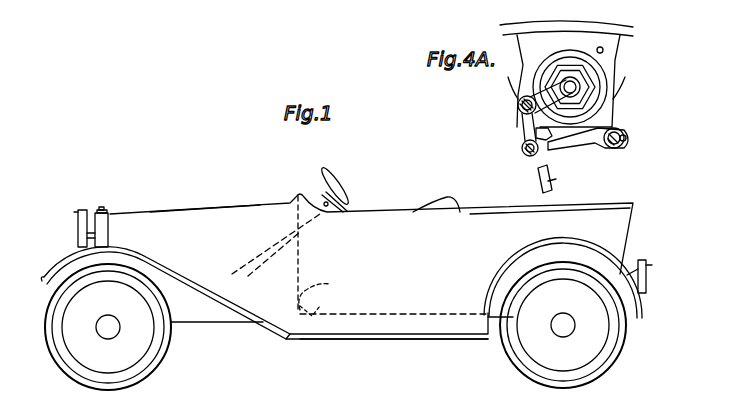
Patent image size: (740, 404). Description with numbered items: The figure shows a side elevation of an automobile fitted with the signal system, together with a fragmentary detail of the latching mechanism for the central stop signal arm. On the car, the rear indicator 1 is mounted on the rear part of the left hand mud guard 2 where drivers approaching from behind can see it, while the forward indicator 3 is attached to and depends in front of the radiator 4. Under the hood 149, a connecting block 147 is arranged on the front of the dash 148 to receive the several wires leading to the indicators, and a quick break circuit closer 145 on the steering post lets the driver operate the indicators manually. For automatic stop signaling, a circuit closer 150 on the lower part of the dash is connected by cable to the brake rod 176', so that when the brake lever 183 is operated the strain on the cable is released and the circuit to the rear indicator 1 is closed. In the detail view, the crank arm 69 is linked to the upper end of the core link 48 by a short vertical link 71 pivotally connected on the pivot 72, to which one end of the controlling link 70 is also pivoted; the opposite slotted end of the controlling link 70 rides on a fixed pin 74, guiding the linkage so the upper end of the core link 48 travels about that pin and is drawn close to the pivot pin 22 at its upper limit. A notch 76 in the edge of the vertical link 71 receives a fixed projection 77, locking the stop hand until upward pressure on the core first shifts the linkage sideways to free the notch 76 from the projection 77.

In FIG. 1, the rear indicator 1 is at (648, 262).
In FIG. 1, the left hand mud guard 2 is at (570, 247).
In FIG. 1, the forward indicator 3 is at (82, 209).
In FIG. 1, the radiator 4 is at (103, 226).
In FIG. 4A, the pivot pin 22 is at (588, 78).
In FIG. 1, the core link 48 is at (557, 179).
In FIG. 4A, the crank arm 69 is at (545, 66).
In FIG. 4A, the controlling link 70 is at (590, 145).
In FIG. 4A, the short vertical link 71 is at (521, 117).
In FIG. 4A, the pivot 72 is at (522, 153).
In FIG. 4A, the fixed pin 74 is at (620, 130).
In FIG. 4A, the notch 76 is at (518, 143).
In FIG. 4A, the projection 77 is at (556, 135).
In FIG. 1, the quick break circuit closer 145 is at (322, 208).
In FIG. 1, the connecting block 147 is at (284, 240).
In FIG. 1, the dash 148 is at (297, 220).
In FIG. 1, the hood 149 is at (200, 208).
In FIG. 1, the circuit closer 150 is at (292, 316).
In FIG. 1, the brake rod 176' is at (394, 341).
In FIG. 1, the brake lever 183 is at (331, 287).